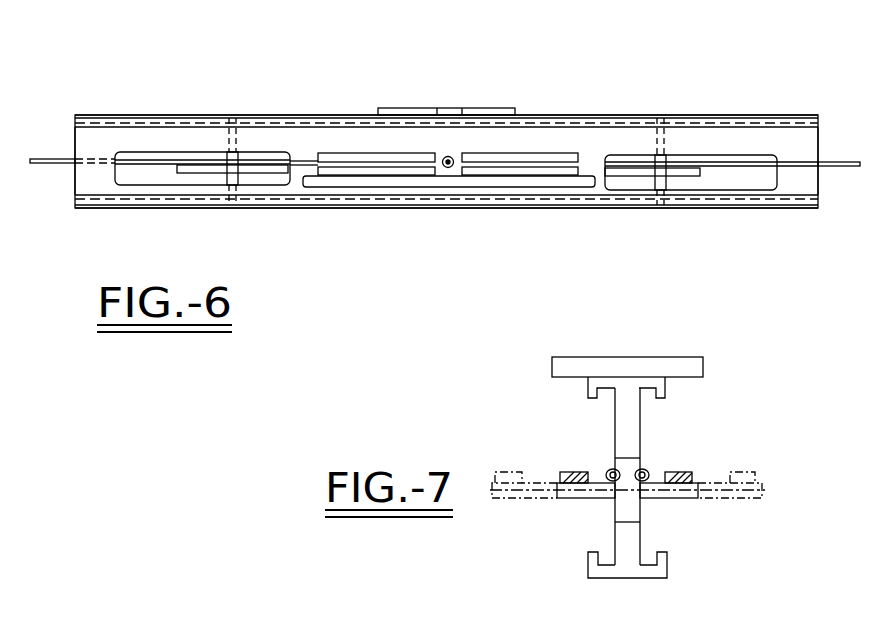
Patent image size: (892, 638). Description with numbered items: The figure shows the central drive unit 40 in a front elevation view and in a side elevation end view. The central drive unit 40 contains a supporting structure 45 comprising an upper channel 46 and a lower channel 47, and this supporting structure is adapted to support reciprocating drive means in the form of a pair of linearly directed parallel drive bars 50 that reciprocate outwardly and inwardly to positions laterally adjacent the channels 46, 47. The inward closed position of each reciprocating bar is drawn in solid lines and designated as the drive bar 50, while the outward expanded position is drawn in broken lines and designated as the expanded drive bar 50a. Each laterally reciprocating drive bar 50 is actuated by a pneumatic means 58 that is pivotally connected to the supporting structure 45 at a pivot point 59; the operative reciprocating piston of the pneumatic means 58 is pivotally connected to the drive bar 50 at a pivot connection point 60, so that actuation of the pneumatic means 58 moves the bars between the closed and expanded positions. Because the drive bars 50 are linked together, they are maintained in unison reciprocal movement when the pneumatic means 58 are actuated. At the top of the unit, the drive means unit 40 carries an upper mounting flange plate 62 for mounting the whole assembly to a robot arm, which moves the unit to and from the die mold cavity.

In FIG. 6, the central drive unit 40 is at (184, 113).
In FIG. 7, the central drive unit 40 is at (645, 352).
In FIG. 6, the supporting structure 45 is at (80, 138).
In FIG. 7, the supporting structure 45 is at (633, 414).
In FIG. 6, the upper channel 46 is at (765, 117).
In FIG. 7, the upper channel 46 is at (664, 384).
In FIG. 6, the lower channel 47 is at (728, 207).
In FIG. 7, the lower channel 47 is at (660, 572).
In FIG. 6, the drive bar 50 is at (45, 166).
In FIG. 7, the drive bar 50 is at (570, 499).
In FIG. 7, the drive bar in outward expanded position 50a is at (516, 470).
In FIG. 6, the pneumatic means 58 is at (362, 183).
In FIG. 7, the pneumatic means 58 is at (602, 458).
In FIG. 6, the pivot point 59 is at (308, 156).
In FIG. 6, the pivot connection point 60 is at (445, 168).
In FIG. 6, the upper mounting flange plate 62 is at (430, 108).
In FIG. 7, the upper mounting flange plate 62 is at (600, 360).